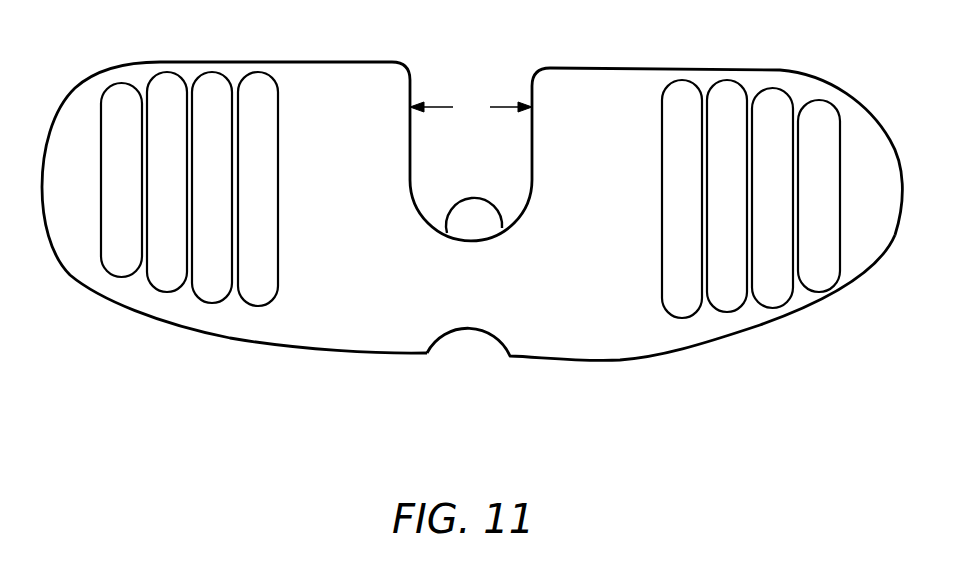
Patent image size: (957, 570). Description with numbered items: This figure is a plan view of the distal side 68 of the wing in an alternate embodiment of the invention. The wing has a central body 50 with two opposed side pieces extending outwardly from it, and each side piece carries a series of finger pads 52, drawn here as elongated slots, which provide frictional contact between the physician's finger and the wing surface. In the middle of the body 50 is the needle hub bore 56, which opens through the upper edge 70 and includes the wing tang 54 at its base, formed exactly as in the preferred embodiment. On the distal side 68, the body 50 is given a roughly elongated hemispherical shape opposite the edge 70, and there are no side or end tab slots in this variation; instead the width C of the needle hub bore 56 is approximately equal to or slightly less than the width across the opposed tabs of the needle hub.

The central body 50 is at (375, 85).
The finger pads 52 is at (158, 83).
The wing tang 54 is at (460, 197).
The needle hub bore 56 is at (478, 88).
The distal side 68 is at (613, 325).
The edge 70 is at (618, 69).